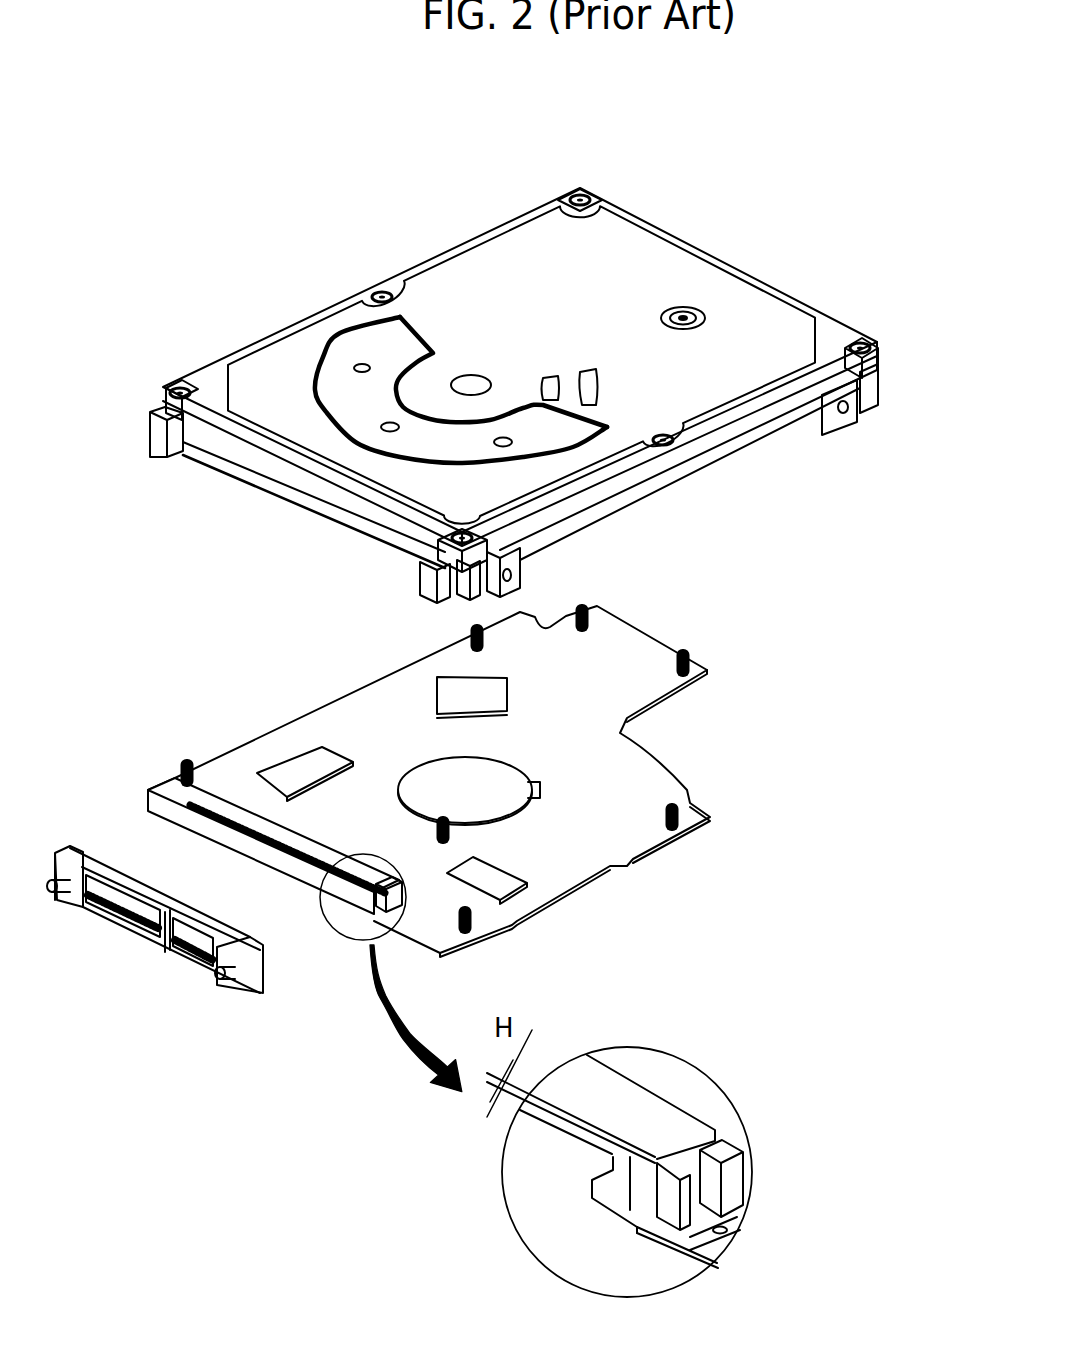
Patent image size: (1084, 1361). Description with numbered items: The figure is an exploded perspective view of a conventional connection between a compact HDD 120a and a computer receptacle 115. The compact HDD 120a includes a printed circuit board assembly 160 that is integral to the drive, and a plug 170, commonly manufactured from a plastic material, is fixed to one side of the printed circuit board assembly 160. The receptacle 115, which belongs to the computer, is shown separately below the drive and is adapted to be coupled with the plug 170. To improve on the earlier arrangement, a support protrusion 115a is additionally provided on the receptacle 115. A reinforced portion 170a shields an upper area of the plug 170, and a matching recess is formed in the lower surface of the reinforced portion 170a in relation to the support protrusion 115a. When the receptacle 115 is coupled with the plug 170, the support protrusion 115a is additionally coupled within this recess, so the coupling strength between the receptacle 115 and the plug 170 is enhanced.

The compact HDD 120a is at (285, 252).
The printed circuit board assembly 160 is at (660, 855).
The receptacle 115 is at (197, 983).
The support protrusion 115a is at (128, 877).
The plug 170 is at (660, 1255).
The reinforced portion 170a is at (677, 1122).